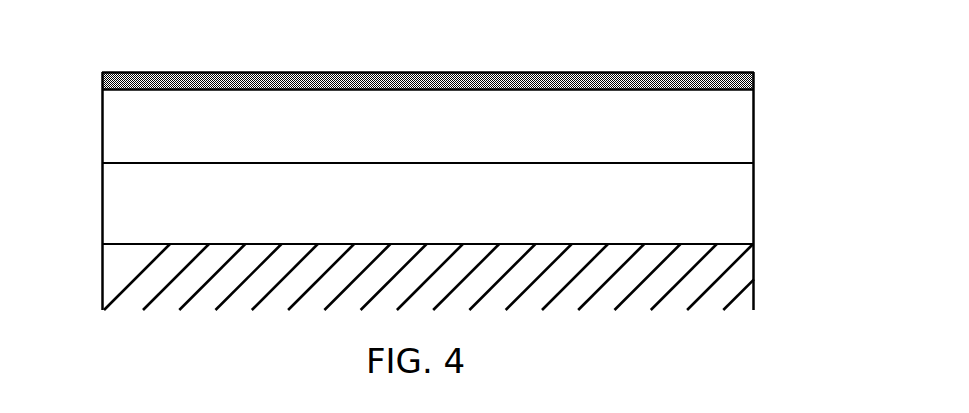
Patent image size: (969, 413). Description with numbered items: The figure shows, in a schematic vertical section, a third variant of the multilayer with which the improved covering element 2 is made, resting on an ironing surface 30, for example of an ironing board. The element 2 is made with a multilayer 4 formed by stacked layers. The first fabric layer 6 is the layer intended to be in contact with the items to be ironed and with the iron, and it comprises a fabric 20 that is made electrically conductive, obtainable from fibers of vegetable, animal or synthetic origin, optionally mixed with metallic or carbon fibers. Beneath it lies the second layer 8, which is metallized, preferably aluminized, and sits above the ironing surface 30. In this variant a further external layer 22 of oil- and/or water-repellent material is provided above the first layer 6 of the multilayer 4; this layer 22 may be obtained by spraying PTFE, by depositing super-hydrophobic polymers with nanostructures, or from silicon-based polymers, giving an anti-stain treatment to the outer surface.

The element for covering an ironing surface 2 is at (637, 28).
The multilayer 4 is at (764, 83).
The first fabric layer 6 is at (731, 136).
The second layer 8 is at (731, 203).
The fabric 20 is at (122, 122).
The further external layer 22 is at (513, 78).
The ironing surface 30 is at (735, 287).